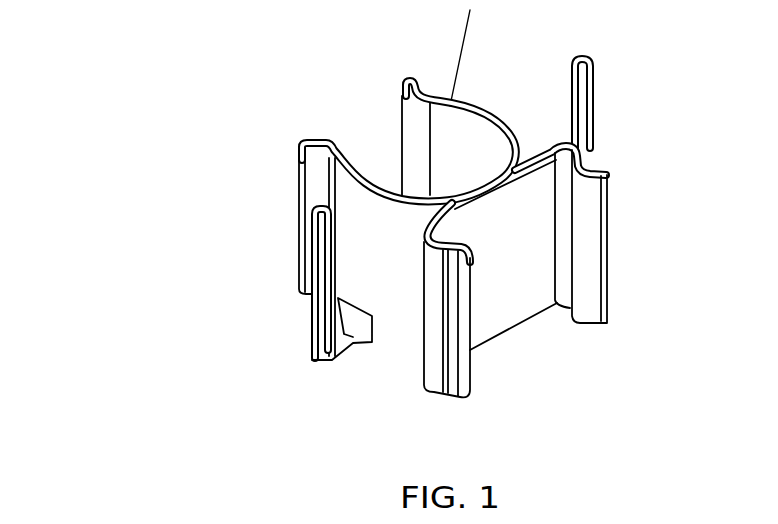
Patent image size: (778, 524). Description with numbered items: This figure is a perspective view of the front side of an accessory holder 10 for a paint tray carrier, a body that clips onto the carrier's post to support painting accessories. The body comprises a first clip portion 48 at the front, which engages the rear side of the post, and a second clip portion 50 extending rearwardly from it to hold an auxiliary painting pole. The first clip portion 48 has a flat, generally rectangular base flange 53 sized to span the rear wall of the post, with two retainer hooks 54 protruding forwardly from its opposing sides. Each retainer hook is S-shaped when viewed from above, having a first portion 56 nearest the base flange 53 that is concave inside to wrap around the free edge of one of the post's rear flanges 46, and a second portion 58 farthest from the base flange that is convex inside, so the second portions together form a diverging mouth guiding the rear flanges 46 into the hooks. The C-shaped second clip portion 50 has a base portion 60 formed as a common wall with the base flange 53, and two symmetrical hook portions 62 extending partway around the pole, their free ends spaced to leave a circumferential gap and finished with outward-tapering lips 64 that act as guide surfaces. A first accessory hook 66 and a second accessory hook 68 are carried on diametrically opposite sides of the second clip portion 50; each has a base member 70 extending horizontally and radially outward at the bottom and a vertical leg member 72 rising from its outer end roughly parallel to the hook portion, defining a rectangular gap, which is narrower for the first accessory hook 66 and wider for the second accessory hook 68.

The accessory holder 10 is at (158, 106).
The rear flanges 46 is at (580, 522).
The first clip portion 48 is at (418, 391).
The second clip portion 50 is at (295, 308).
The base flange 53 is at (535, 318).
The retainer hooks 54 is at (545, 274).
The first portion 56 is at (427, 240).
The second portion 58 is at (467, 240).
The base portion 60 is at (500, 130).
The hook portions 62 is at (360, 185).
The lips 64 is at (313, 150).
The first accessory hook 66 is at (317, 255).
The second accessory hook 68 is at (597, 108).
The base member 70 is at (352, 335).
The vertical leg member 72 is at (317, 317).